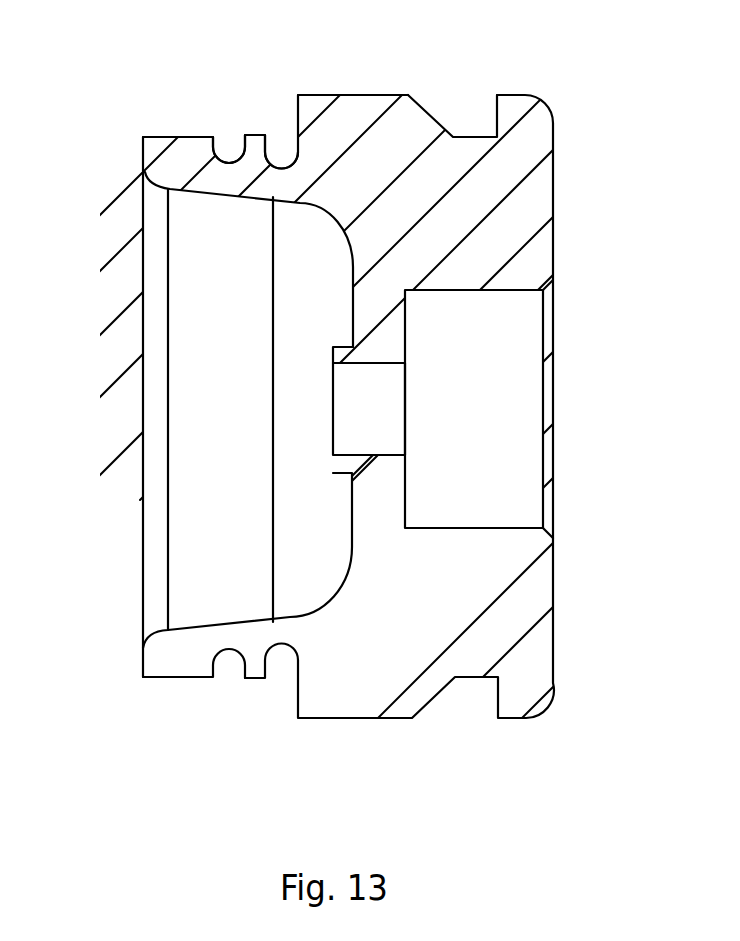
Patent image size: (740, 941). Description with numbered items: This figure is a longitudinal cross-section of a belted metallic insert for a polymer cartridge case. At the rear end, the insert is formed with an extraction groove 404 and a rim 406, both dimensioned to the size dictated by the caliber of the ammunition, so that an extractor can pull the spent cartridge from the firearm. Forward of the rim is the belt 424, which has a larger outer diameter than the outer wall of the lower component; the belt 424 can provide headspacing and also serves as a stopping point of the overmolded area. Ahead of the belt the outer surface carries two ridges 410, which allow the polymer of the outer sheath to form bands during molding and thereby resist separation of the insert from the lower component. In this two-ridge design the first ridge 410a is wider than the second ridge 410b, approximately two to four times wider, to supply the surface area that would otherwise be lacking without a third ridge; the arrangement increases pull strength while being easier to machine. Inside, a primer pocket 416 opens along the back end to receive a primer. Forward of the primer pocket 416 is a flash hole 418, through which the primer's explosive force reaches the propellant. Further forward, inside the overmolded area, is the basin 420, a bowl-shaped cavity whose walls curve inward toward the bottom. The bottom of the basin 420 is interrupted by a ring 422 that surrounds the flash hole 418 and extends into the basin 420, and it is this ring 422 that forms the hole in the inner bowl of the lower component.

The extraction groove 404 is at (472, 137).
The rim 406 is at (523, 95).
The ridges 410 is at (255, 132).
The first ridge 410a is at (163, 690).
The second ridge 410b is at (258, 690).
The primer pocket 416 is at (528, 365).
The flash hole 418 is at (383, 420).
The basin 420 is at (200, 517).
The ring 422 is at (332, 352).
The belt 424 is at (358, 95).